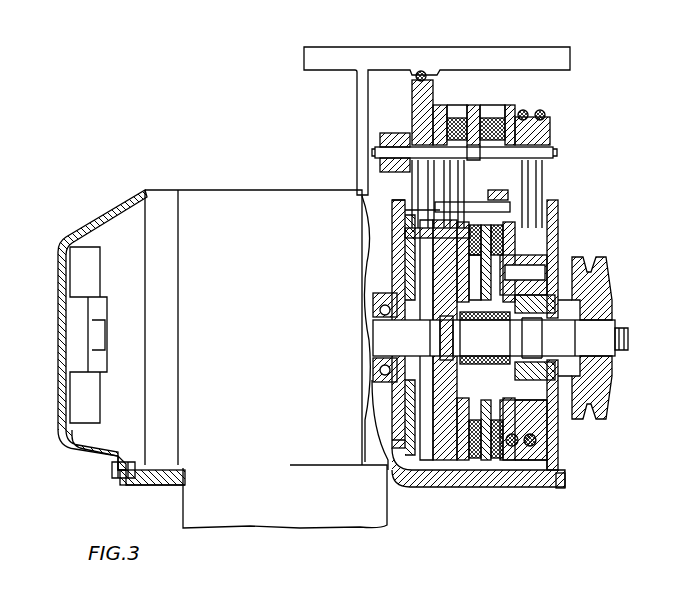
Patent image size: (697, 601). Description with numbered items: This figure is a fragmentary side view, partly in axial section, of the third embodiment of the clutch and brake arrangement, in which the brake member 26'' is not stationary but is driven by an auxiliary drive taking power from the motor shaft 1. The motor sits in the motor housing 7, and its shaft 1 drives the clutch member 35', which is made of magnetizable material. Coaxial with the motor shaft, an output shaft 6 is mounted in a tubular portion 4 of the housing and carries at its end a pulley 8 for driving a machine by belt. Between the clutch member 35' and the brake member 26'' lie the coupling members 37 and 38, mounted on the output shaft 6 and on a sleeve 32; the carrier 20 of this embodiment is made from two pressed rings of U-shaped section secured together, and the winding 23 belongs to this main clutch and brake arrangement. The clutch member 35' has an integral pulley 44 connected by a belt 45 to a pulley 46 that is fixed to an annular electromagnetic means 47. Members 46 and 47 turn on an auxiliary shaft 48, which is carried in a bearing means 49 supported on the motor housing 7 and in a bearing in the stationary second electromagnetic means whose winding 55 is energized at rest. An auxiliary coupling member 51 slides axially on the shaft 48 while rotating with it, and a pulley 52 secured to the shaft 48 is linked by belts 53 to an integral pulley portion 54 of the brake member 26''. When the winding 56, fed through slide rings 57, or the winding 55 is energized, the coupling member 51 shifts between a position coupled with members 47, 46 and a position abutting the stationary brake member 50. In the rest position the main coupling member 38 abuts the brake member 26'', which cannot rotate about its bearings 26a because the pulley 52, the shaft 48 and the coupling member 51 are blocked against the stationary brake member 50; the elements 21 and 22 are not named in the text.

The motor shaft 1 is at (95, 335).
The tubular portion 4 is at (545, 292).
The output shaft 6 is at (600, 340).
The motor housing 7 is at (212, 206).
The pulley 8 is at (590, 297).
The carrier 20 is at (470, 465).
The electromagnet coil 21 is at (496, 465).
The magnet body 22 is at (460, 465).
The winding 23 is at (482, 465).
The bearings 26a is at (545, 268).
The brake member 26'' is at (537, 481).
The sleeve 32 is at (466, 356).
The clutch member 35' is at (381, 335).
The coupling member 37 is at (445, 428).
The main coupling member 38 is at (560, 490).
The pulley 44 is at (398, 352).
The belt 45 is at (420, 262).
The pulley 46 is at (410, 98).
The annular electromagnetic means 47 is at (415, 120).
The auxiliary shaft 48 is at (555, 153).
The bearing means 49 is at (405, 143).
The stationary brake member 50 is at (518, 105).
The auxiliary coupling member 51 is at (476, 110).
The pulley 52 is at (553, 125).
The belts 53 is at (552, 200).
The pulley portion 54 is at (548, 430).
The winding 55 is at (497, 110).
The winding 56 is at (460, 107).
The slide rings 57 is at (418, 76).